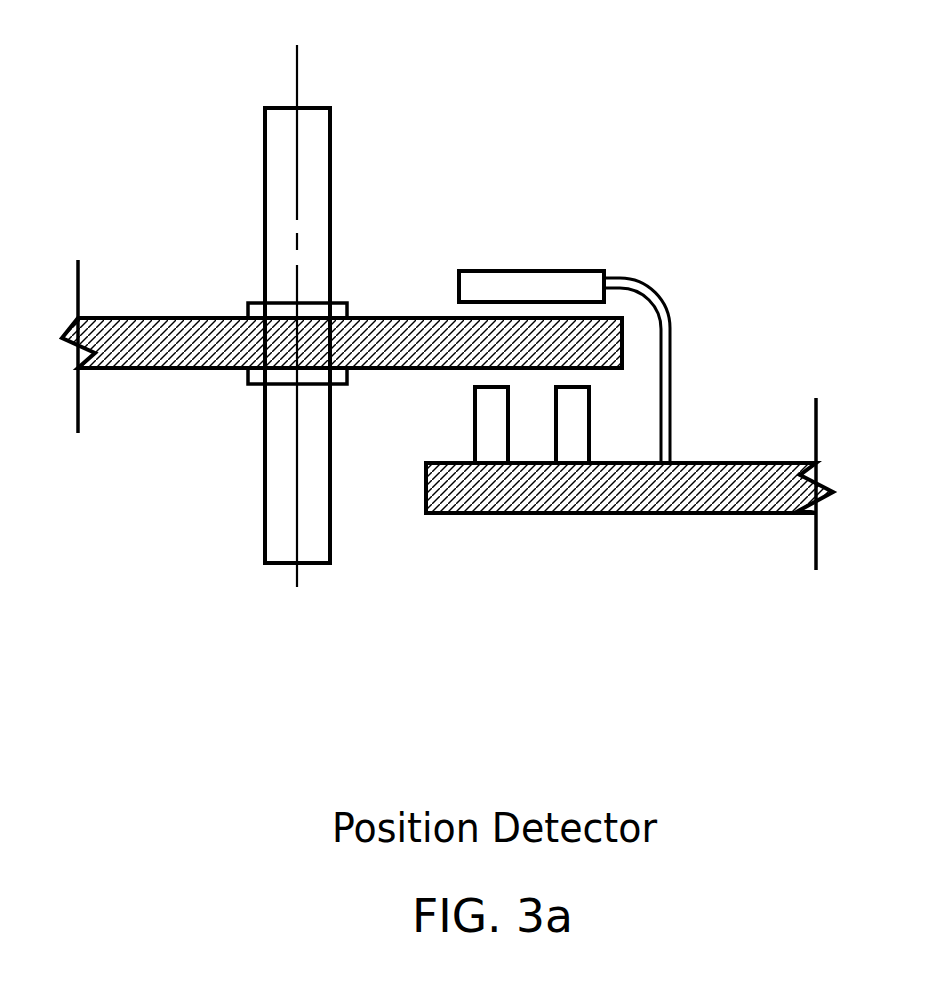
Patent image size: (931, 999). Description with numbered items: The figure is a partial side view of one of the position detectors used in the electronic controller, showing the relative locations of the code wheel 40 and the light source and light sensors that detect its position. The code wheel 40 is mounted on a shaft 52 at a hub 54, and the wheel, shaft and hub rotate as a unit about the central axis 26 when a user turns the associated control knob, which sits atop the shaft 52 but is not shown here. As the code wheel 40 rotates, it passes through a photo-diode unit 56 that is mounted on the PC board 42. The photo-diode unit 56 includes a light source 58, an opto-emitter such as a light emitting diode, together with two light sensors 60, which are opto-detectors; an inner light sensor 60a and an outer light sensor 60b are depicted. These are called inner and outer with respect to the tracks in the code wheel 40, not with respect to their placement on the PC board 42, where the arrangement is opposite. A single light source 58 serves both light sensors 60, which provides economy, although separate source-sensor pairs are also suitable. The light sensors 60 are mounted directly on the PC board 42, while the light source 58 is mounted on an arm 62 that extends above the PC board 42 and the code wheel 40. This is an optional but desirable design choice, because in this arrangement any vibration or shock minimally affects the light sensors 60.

The central axis 26 is at (297, 62).
The code wheel 40 is at (168, 317).
The PC board 42 is at (637, 513).
The shaft 52 is at (312, 192).
The hub 54 is at (248, 385).
The photo-diode unit 56 is at (538, 447).
The light source 58 is at (523, 271).
The light sensors 60 is at (425, 544).
The inner light sensor 60a is at (492, 447).
The outer light sensor 60b is at (572, 447).
The arm 62 is at (670, 365).